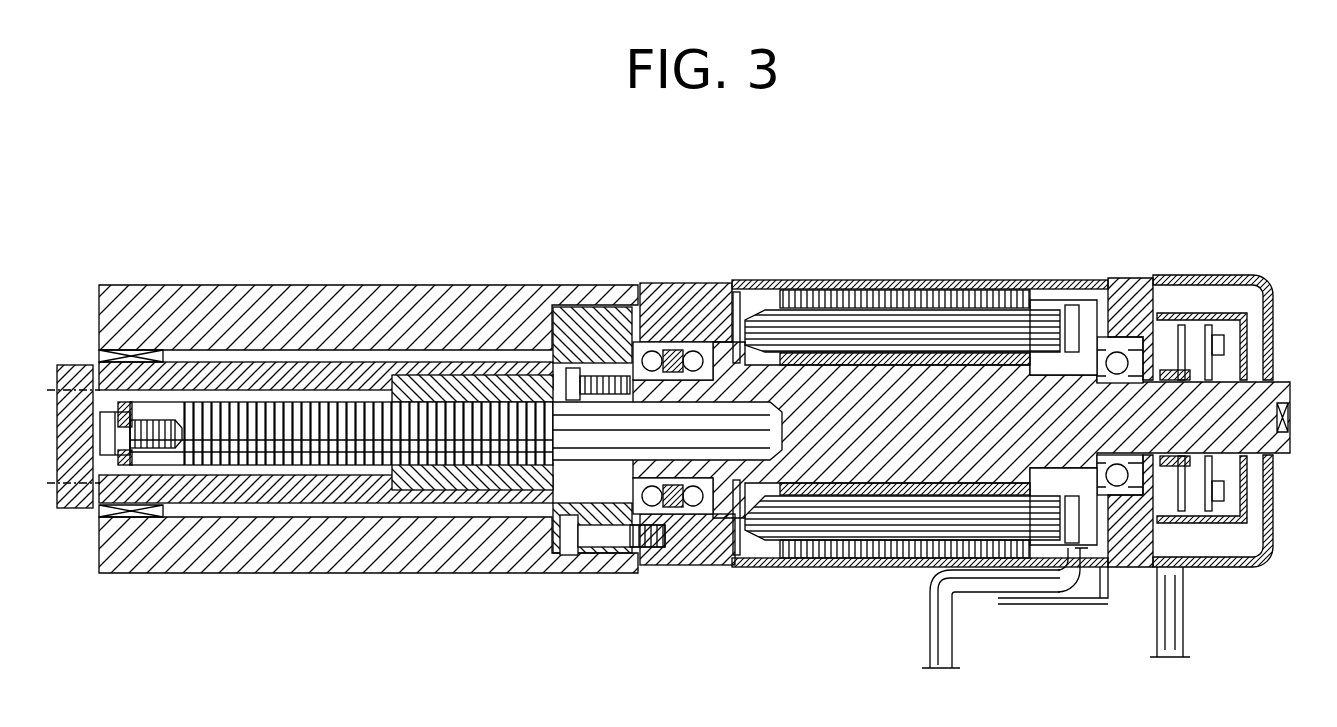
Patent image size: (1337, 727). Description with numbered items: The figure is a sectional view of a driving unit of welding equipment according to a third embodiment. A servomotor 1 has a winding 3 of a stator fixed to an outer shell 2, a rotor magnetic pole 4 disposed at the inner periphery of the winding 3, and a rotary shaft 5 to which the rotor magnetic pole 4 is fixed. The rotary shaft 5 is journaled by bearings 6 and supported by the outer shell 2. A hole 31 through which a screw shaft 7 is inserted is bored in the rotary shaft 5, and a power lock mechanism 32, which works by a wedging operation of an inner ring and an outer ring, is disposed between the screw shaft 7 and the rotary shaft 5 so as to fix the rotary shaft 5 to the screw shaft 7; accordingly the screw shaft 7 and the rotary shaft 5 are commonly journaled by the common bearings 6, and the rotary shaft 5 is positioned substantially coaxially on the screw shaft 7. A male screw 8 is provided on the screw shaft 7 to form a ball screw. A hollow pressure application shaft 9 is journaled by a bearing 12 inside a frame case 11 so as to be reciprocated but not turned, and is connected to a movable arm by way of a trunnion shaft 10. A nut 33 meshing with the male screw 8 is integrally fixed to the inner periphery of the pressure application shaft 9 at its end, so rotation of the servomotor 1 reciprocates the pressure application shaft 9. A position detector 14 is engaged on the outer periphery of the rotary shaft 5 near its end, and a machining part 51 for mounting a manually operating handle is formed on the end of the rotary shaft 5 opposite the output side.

The servomotor 1 is at (1010, 270).
The outer shell 2 is at (800, 282).
The winding 3 is at (855, 300).
The rotor magnetic pole 4 is at (913, 330).
The rotary shaft 5 is at (990, 385).
The bearings 6 is at (694, 340).
The screw shaft 7 is at (921, 430).
The male screw 8 is at (298, 405).
The pressure application shaft 9 is at (199, 378).
The trunnion shaft 10 is at (67, 360).
The frame case 11 is at (377, 307).
The bearing 12 is at (137, 356).
The position detector 14 is at (1200, 320).
The hole 31 is at (740, 330).
The power lock mechanism 32 is at (658, 455).
The nut 33 is at (458, 380).
The machining part 51 is at (1292, 416).